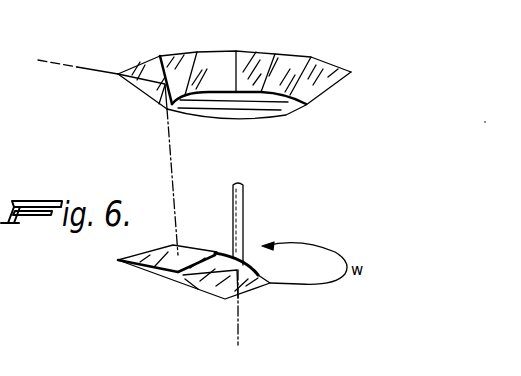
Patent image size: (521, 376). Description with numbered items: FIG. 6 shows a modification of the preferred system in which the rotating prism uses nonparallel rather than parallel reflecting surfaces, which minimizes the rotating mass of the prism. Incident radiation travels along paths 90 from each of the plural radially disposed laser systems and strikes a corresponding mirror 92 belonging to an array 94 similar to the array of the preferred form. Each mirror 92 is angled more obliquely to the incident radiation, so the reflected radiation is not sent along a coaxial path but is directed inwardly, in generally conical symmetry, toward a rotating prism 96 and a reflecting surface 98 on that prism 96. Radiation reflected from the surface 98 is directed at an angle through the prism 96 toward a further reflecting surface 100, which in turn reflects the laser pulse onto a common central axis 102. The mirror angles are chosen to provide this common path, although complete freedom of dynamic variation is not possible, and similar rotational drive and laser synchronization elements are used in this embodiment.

The incident radiation path 90 is at (78, 67).
The mirror 92 is at (160, 56).
The array 94 is at (252, 45).
The rotating prism 96 is at (193, 250).
The reflecting surface 98 is at (183, 287).
The further reflecting surface 100 is at (260, 268).
The common central axis 102 is at (240, 336).